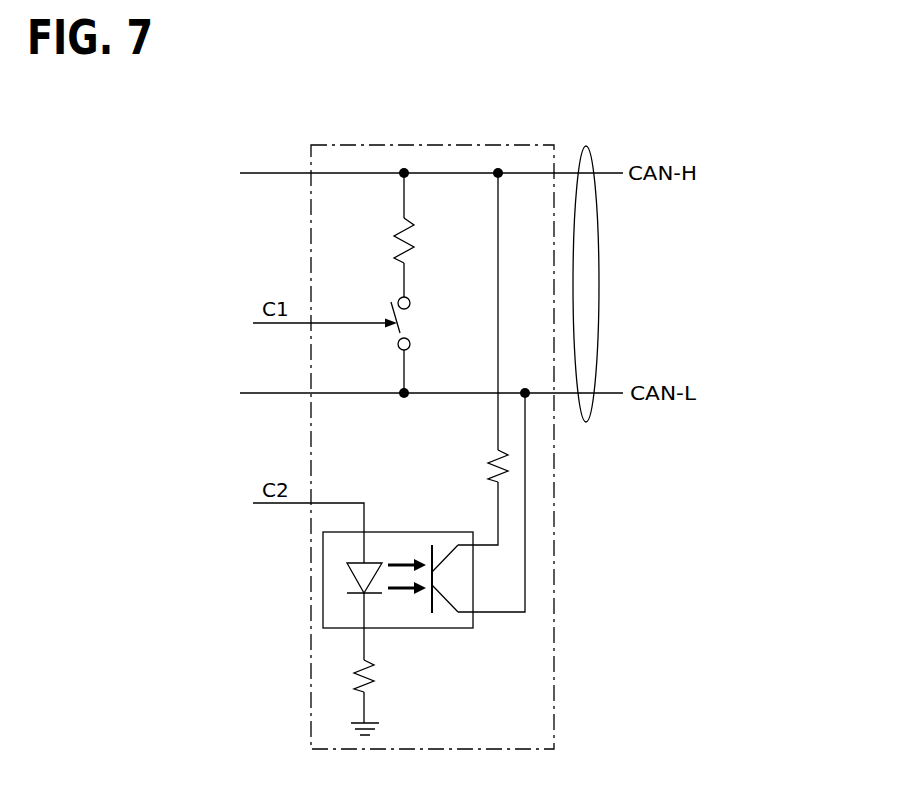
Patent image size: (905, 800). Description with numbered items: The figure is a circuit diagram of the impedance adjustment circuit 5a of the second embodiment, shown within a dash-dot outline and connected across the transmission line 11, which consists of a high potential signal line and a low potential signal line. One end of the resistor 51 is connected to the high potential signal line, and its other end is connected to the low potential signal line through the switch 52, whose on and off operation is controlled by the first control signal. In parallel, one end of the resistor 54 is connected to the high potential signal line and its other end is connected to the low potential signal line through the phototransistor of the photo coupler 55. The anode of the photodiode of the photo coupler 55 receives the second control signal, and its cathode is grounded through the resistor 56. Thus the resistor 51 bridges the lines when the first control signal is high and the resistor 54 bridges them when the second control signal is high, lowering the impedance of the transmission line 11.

The impedance adjustment circuit 5a is at (352, 143).
The transmission line 11 is at (585, 153).
The resistor 51 is at (395, 233).
The switch 52 is at (397, 333).
The resistor 54 is at (495, 460).
The photo coupler 55 is at (422, 530).
The resistor 56 is at (368, 662).